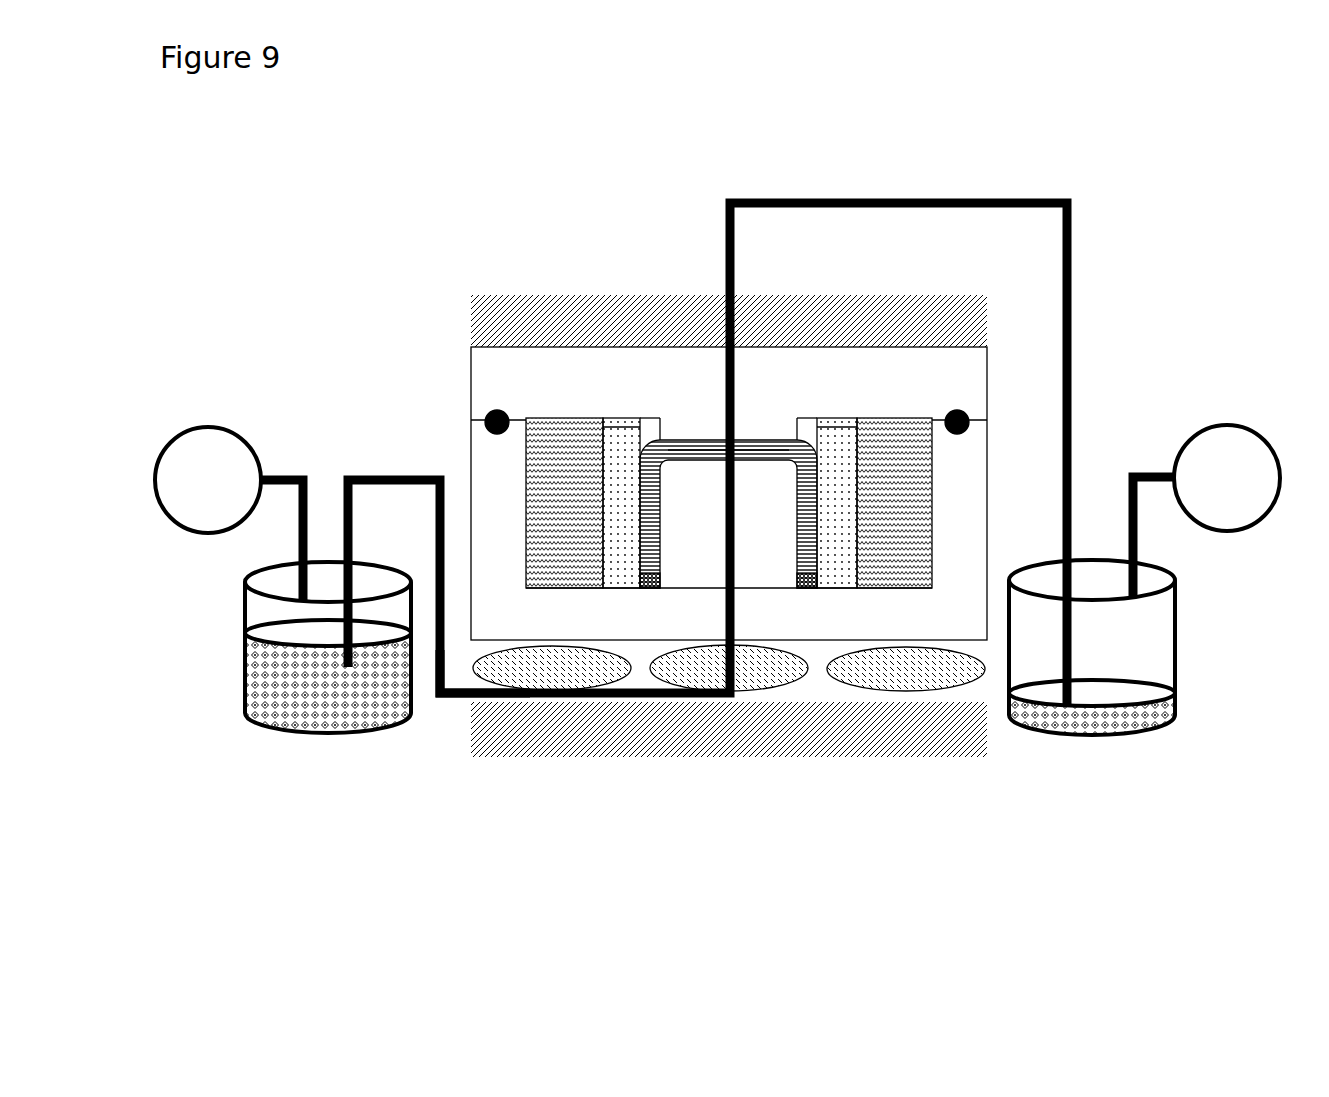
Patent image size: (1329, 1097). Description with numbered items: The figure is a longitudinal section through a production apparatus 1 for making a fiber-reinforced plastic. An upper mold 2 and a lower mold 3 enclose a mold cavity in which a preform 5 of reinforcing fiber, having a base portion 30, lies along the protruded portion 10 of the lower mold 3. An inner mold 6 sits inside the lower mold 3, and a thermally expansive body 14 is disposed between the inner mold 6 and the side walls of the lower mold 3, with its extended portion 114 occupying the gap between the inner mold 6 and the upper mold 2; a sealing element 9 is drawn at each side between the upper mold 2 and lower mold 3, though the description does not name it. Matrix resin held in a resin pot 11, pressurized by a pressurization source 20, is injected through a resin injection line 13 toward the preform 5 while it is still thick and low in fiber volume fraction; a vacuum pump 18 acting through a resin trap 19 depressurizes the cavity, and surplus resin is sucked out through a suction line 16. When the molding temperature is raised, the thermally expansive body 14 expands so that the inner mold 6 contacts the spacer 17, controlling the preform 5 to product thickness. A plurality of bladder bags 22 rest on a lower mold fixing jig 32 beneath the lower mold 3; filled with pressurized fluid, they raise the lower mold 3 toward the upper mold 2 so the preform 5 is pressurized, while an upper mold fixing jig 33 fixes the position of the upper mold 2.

The production apparatus 1 is at (397, 298).
The upper mold 2 is at (873, 385).
The lower mold 3 is at (813, 622).
The preform 5 is at (713, 455).
The inner mold 6 is at (620, 560).
The seal 9 is at (968, 420).
The protruded portion 10 is at (762, 533).
The resin pot 11 is at (326, 720).
The resin injection line 13 is at (623, 697).
The thermally expansive body 14 is at (560, 503).
The suction line 16 is at (903, 200).
The spacer 17 is at (813, 588).
The vacuum pump 18 is at (1237, 533).
The resin trap 19 is at (1120, 735).
The pressurization source 20 is at (185, 533).
The bladder bags 22 is at (500, 673).
The base portion 30 is at (775, 437).
The lower mold fixing jig 32 is at (543, 720).
The upper mold fixing jig 33 is at (540, 320).
The extended portion 114 is at (632, 418).